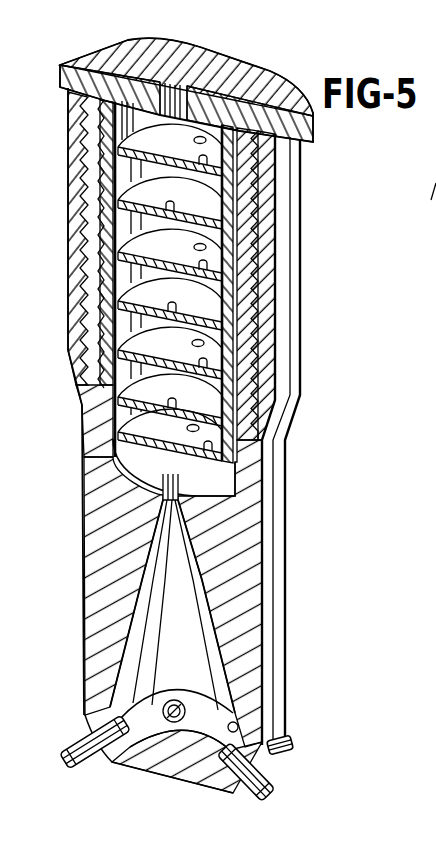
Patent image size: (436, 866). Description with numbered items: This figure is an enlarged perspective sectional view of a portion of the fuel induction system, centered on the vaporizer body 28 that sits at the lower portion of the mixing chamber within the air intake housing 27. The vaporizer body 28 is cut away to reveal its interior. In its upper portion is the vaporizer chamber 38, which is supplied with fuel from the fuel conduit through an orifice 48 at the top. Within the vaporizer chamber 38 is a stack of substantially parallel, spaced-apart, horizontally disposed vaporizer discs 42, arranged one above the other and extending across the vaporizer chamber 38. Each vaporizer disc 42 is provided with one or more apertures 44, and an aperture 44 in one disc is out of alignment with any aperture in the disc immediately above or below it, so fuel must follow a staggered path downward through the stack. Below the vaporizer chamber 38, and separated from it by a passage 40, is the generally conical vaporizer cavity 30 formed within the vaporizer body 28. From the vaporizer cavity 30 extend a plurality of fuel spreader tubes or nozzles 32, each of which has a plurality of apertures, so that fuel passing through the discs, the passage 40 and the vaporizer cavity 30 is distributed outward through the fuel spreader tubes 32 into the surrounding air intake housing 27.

The air intake housing 27 is at (403, 267).
The vaporizer body 28 is at (96, 518).
The vaporizer cavity 30 is at (183, 643).
The fuel spreader tubes 32 is at (229, 722).
The vaporizer chamber 38 is at (126, 130).
The passage 40 is at (166, 492).
The vaporizer discs 42 is at (172, 228).
The apertures 44 is at (186, 142).
The orifice 48 is at (180, 86).